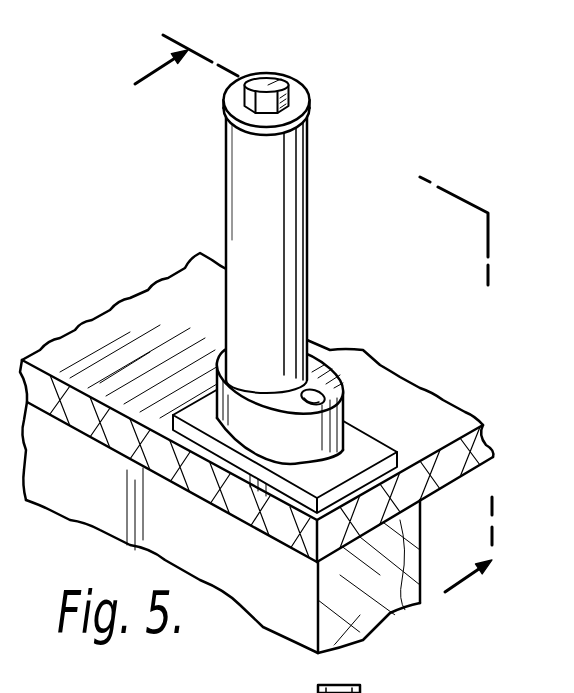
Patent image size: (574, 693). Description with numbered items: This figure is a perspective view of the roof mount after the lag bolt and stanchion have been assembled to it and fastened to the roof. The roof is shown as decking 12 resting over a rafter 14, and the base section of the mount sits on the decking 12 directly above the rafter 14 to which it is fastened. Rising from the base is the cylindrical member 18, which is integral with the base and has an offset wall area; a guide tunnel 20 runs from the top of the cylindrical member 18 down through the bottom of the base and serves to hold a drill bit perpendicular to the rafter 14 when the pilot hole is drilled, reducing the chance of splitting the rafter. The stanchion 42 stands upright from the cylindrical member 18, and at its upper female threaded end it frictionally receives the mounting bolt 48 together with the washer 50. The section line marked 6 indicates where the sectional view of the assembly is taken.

The section line 6- 6 is at (298, 322).
The decking 12 is at (120, 318).
The rafter 14 is at (363, 625).
The cylindrical member 18 is at (358, 348).
The guide tunnel 20 is at (325, 393).
The stanchion 42 is at (312, 258).
The mounting bolt 48 is at (273, 85).
The washer 50 is at (313, 107).